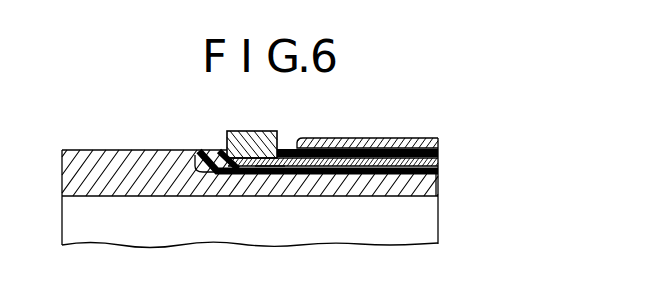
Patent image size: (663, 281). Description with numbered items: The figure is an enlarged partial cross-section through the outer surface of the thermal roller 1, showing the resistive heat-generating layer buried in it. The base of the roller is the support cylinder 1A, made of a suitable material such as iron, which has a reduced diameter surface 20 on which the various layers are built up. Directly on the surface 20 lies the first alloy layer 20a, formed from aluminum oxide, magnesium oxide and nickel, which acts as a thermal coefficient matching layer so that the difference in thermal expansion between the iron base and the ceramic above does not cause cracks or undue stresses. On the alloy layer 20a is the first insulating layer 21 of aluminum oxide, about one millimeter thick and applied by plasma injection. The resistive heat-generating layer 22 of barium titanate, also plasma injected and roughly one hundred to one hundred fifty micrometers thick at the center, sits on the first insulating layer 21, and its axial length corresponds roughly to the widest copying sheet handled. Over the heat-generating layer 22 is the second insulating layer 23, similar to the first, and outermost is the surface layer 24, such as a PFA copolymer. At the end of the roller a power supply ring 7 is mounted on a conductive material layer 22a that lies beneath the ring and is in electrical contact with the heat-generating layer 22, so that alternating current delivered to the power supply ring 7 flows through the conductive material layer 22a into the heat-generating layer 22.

The thermal roller 1 is at (62, 207).
The support cylinder 1A is at (93, 150).
The power supply ring 7 is at (250, 132).
The reduced diameter surface 20 is at (318, 173).
The first alloy layer 20a is at (438, 180).
The first insulating layer 21 is at (438, 172).
The resistive heat-generating layer 22 is at (438, 164).
The conductive material layer 22a is at (266, 174).
The second insulating layer 23 is at (438, 152).
The surface layer 24 is at (423, 140).